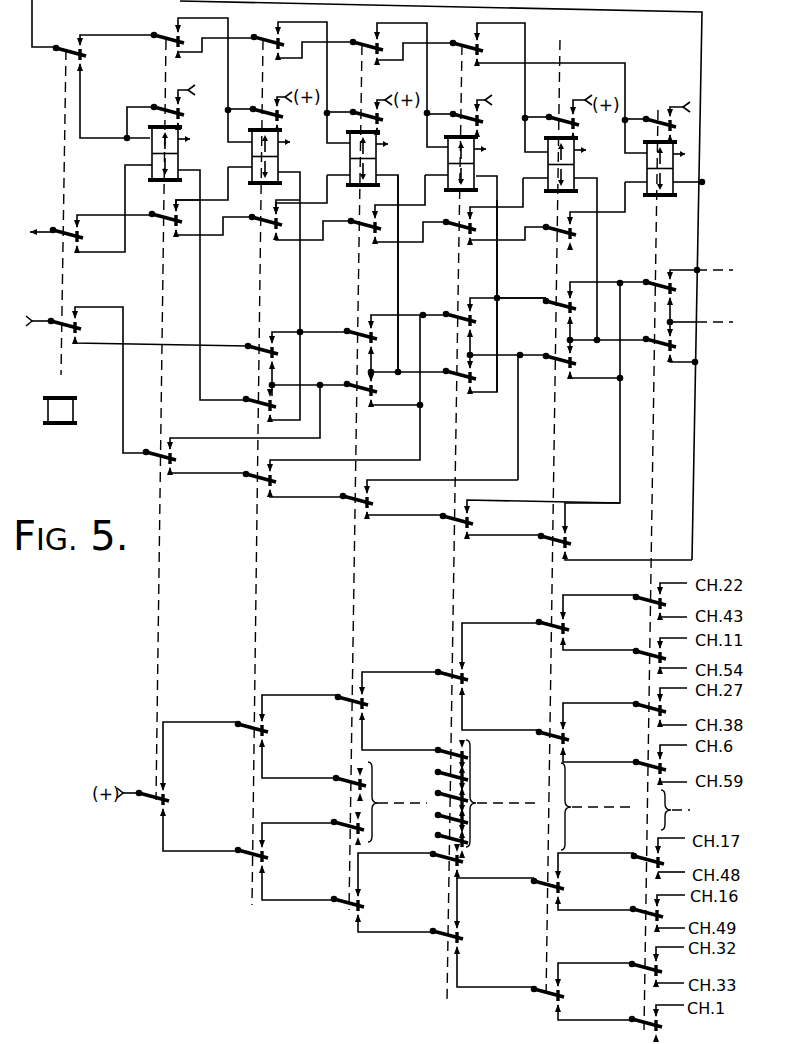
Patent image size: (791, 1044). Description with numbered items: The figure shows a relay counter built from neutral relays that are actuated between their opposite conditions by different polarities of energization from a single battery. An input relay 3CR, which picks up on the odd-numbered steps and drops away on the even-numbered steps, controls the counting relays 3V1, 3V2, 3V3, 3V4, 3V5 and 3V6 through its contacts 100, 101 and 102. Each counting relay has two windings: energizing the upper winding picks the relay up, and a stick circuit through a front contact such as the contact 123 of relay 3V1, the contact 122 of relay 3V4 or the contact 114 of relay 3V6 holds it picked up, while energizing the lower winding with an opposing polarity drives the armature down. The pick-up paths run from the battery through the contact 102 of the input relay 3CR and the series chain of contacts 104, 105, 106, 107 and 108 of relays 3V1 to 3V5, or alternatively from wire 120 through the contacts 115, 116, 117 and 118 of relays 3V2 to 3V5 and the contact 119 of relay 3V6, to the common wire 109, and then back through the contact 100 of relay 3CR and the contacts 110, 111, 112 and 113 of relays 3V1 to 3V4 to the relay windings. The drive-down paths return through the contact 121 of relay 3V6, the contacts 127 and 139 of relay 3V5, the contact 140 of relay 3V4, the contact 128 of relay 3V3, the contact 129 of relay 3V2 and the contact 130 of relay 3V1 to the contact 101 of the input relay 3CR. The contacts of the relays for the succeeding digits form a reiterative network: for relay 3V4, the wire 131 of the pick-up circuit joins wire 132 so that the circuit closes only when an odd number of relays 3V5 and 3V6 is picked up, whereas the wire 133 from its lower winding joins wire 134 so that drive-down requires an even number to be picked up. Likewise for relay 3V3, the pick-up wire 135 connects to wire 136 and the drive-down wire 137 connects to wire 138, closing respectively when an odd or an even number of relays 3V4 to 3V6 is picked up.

The contact of input relay 3CR 100 is at (63, 54).
The contact of input relay 3CR 101 is at (62, 238).
The contact of input relay 3CR 102 is at (58, 330).
The contact of relay 3V1 104 is at (148, 459).
The contact of relay 3V2 105 is at (246, 482).
The contact of relay 3V3 106 is at (343, 501).
The contact of relay 3V4 107 is at (445, 523).
The contact of relay 3V5 108 is at (548, 544).
The wire 109 is at (707, 232).
The contact of relay 3V1 110 is at (167, 42).
The contact of relay 3V2 111 is at (265, 45).
The contact of relay 3V3 112 is at (370, 50).
The contact of relay 3V4 113 is at (470, 51).
The front contact of relay 3V6 114 is at (658, 117).
The back contact of relay 3V2 115 is at (253, 352).
The back contact of relay 3V3 116 is at (357, 393).
The back contact of relay 3V4 117 is at (457, 318).
The contact of relay 3V5 118 is at (558, 361).
The front contact of relay 3V6 119 is at (655, 291).
The wire 120 is at (138, 345).
The back contact of relay 3V6 121 is at (655, 349).
The front contact of relay 3V4 122 is at (474, 114).
The front contact of relay 3V1 123 is at (163, 106).
The back contact of relay 3V5 127 is at (557, 301).
The contact of relay 3V3 128 is at (389, 231).
The contact of relay 3V2 129 is at (290, 222).
The contact of relay 3V1 130 is at (156, 223).
The wire 131 is at (518, 441).
The wire of reiterative network 132 is at (520, 355).
The wire 133 is at (497, 264).
The wire 134 is at (521, 310).
The wire 135 is at (420, 458).
The wire of reiterative network 136 is at (400, 315).
The wire 137 is at (398, 270).
The wire of reiterative network 138 is at (413, 373).
The front contact of relay 3V5 139 is at (569, 237).
The back contact of relay 3V4 140 is at (487, 233).
The first counting relay 3V1 is at (177, 163).
The counting relay 3V2 is at (278, 166).
The counting relay 3V3 is at (376, 168).
The counting relay 3V4 is at (476, 170).
The counting relay 3V5 is at (572, 172).
The counting relay 3V6 is at (666, 194).
The input relay 3CR is at (60, 398).